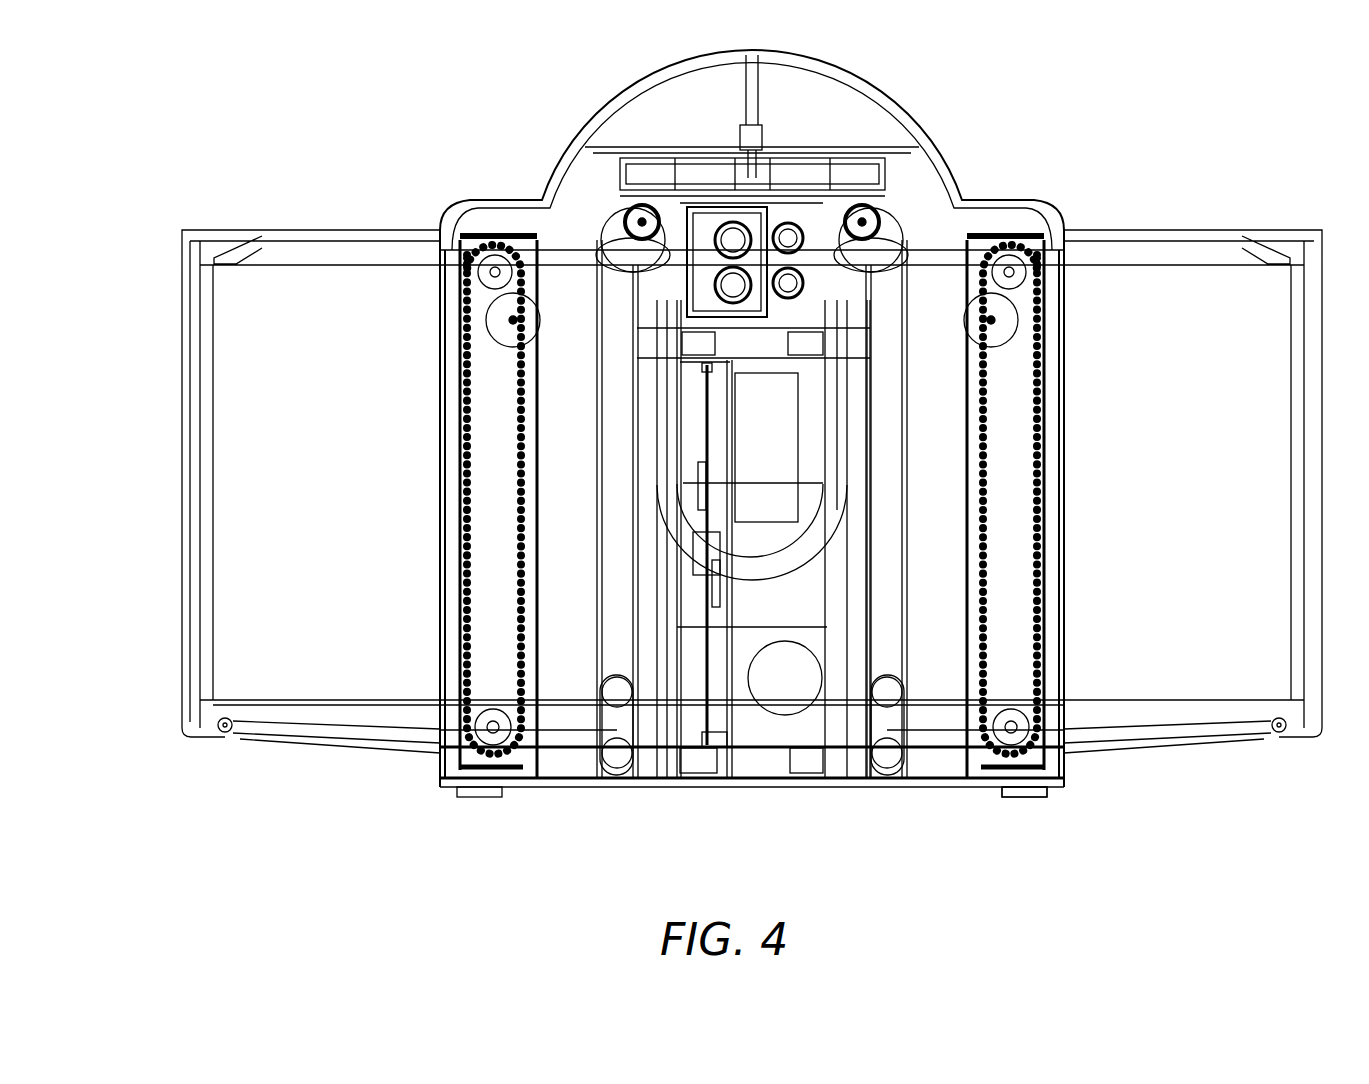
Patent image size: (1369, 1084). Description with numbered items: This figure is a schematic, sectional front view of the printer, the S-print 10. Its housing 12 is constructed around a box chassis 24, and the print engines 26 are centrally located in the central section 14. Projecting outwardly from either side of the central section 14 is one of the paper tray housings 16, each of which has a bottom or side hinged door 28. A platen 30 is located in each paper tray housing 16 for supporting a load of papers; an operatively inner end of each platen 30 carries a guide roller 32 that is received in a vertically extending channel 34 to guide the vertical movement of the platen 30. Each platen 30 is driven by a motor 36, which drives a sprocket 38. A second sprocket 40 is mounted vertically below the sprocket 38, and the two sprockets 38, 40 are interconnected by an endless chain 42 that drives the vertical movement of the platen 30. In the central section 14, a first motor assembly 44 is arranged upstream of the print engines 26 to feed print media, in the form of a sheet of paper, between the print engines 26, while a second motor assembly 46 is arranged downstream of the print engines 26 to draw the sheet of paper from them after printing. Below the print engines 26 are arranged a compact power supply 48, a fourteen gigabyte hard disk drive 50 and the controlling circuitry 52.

The S-print 10 is at (945, 800).
The housing 12 is at (1085, 781).
The central section 14 is at (470, 210).
The paper tray housing 16 is at (327, 237).
The box chassis 24 is at (667, 790).
The print engines 26 is at (760, 225).
The hinged door 28 is at (190, 638).
The platen 30 is at (305, 712).
The guide roller 32 is at (620, 690).
The vertically extending channel 34 is at (603, 270).
The motor 36 is at (503, 330).
The sprocket 38 is at (453, 228).
The second sprocket 40 is at (450, 780).
The endless chain 42 is at (460, 677).
The first motor assembly 44 is at (612, 305).
The second motor assembly 46 is at (820, 234).
The compact power supply 48 is at (780, 732).
The hard disk drive 50 is at (783, 427).
The controlling circuitry 52 is at (705, 495).